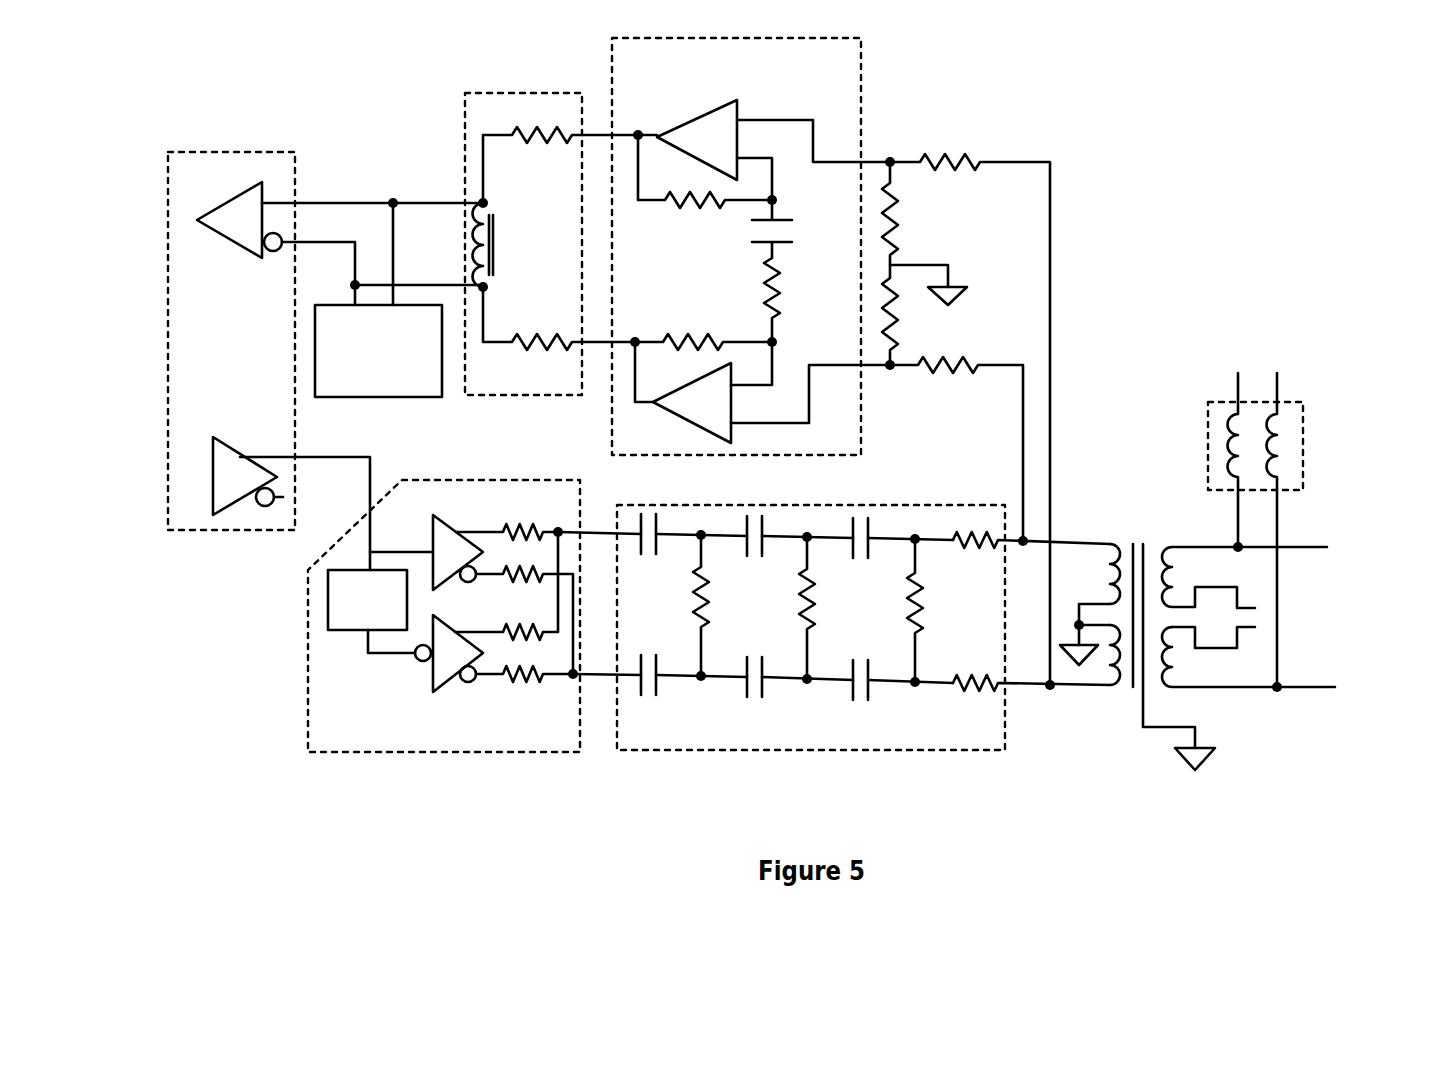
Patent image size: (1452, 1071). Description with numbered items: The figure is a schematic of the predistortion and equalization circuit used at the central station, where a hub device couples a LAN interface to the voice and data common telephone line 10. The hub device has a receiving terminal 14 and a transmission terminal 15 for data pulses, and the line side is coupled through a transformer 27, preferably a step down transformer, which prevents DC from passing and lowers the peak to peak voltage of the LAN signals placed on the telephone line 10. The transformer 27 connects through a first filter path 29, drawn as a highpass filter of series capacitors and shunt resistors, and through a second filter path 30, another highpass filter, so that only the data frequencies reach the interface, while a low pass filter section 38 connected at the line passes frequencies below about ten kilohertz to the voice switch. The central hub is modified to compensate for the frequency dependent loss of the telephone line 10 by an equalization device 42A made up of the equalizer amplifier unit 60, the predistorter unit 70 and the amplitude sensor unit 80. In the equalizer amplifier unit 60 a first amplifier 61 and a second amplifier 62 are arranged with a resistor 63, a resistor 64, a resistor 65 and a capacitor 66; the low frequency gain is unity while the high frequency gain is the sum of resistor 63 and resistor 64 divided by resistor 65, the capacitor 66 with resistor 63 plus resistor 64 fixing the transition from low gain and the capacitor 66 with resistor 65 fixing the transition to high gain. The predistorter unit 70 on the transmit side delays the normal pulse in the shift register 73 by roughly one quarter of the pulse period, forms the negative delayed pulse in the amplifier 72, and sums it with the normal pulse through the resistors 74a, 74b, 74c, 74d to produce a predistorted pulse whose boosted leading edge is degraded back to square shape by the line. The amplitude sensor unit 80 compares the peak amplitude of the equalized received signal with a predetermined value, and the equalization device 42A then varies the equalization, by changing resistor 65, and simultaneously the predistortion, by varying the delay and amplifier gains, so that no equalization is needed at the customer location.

The common telephone line 10 is at (1370, 572).
The receiving terminal 14 is at (218, 202).
The transmission terminal 15 is at (240, 444).
The transformer 27 is at (1135, 698).
The first filter path 29 is at (930, 755).
The second filter path 30 is at (544, 92).
The low pass filter section 38 is at (1308, 413).
The equalization device 42A is at (1062, 192).
The equalization amplifier unit 60 is at (866, 55).
The amplifier 61 is at (677, 130).
The amplifier 62 is at (682, 420).
The resistor 63 is at (720, 213).
The resistor 64 is at (703, 325).
The resistor 65 is at (780, 287).
The capacitor 66 is at (793, 230).
The predistorter unit 70 is at (528, 473).
The amplifier 72 is at (428, 678).
The shift register 73 is at (322, 618).
The resistor 74a is at (509, 520).
The resistor 74b is at (524, 608).
The resistor 74c is at (506, 586).
The resistor 74d is at (527, 662).
The amplitude sensor unit 80 is at (390, 400).